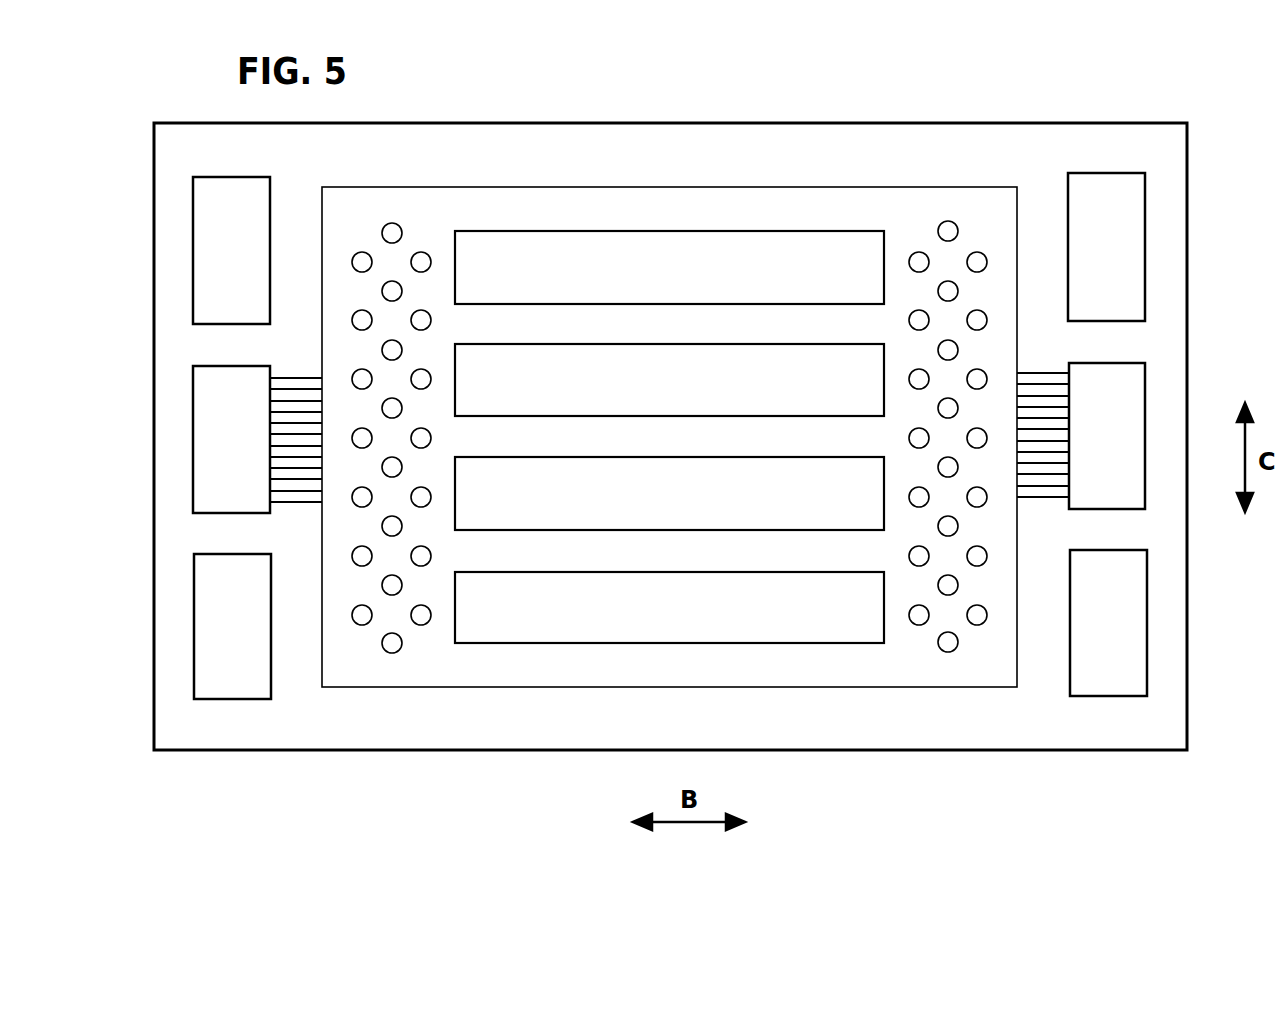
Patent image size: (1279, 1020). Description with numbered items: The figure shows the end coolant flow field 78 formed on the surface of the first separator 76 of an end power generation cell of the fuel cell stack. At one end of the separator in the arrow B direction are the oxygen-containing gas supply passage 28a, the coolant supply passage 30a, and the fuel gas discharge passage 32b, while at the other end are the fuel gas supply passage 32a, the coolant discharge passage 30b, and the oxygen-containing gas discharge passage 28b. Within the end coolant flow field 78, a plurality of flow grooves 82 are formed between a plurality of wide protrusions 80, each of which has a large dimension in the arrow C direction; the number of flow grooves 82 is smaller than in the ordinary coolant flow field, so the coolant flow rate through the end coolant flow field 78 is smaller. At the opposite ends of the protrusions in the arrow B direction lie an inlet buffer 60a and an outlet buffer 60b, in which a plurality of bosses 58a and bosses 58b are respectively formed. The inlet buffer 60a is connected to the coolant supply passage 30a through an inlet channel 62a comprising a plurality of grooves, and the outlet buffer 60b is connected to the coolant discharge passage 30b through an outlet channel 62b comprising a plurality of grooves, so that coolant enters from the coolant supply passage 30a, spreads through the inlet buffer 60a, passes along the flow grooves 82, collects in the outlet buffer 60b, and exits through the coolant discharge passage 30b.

The first separator 76 is at (843, 104).
The end coolant flow field 78 is at (803, 212).
The wide protrusions 80 is at (501, 242).
The flow grooves 82 is at (688, 327).
The bosses 58a is at (391, 645).
The bosses 58b is at (948, 228).
The inlet buffer 60a is at (390, 260).
The outlet buffer 60b is at (951, 610).
The oxygen-containing gas supply passage 28a is at (231, 250).
The oxygen-containing gas discharge passage 28b is at (1108, 623).
The coolant supply passage 30a is at (231, 439).
The coolant discharge passage 30b is at (1107, 436).
The fuel gas supply passage 32a is at (1106, 247).
The fuel gas discharge passage 32b is at (232, 626).
The inlet channel 62a is at (269, 381).
The outlet channel 62b is at (1069, 469).